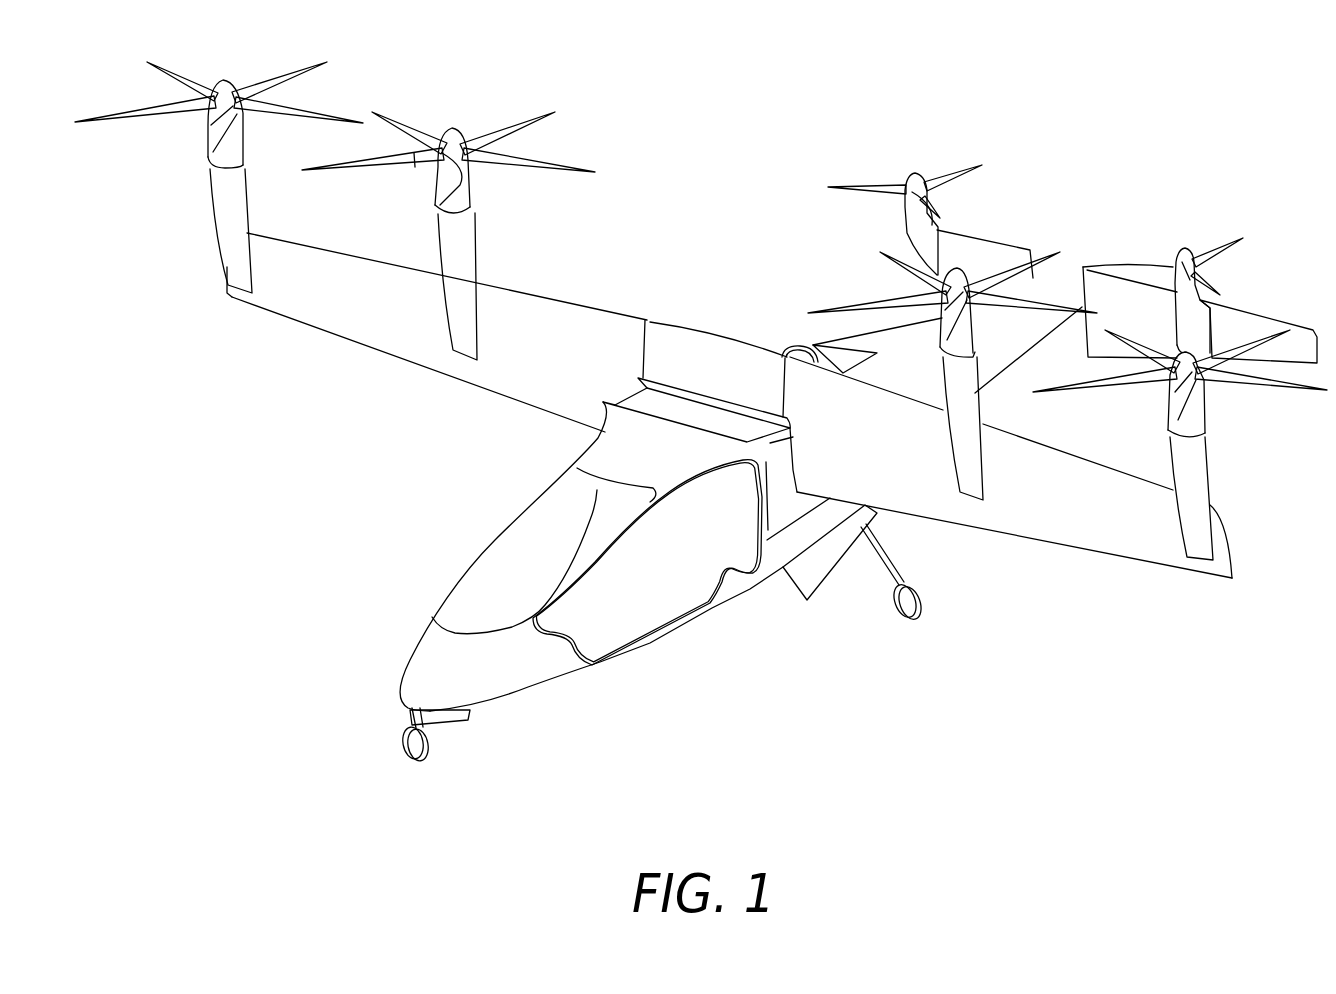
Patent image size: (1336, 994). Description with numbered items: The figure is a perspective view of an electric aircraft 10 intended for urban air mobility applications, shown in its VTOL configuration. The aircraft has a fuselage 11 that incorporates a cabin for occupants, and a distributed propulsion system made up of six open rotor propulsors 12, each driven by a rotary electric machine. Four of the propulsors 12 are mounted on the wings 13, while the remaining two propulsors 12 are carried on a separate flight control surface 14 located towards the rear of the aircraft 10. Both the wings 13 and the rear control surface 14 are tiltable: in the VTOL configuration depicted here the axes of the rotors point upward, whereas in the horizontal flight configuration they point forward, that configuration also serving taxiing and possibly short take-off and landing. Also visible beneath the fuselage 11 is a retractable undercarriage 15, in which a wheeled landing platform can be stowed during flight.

The electric aircraft 10 is at (1159, 108).
The fuselage 11 is at (563, 689).
The open rotor propulsors 12 is at (450, 130).
The wings 13 is at (340, 325).
The flight control surface 14 is at (1263, 322).
The retractable undercarriage 15 is at (830, 575).